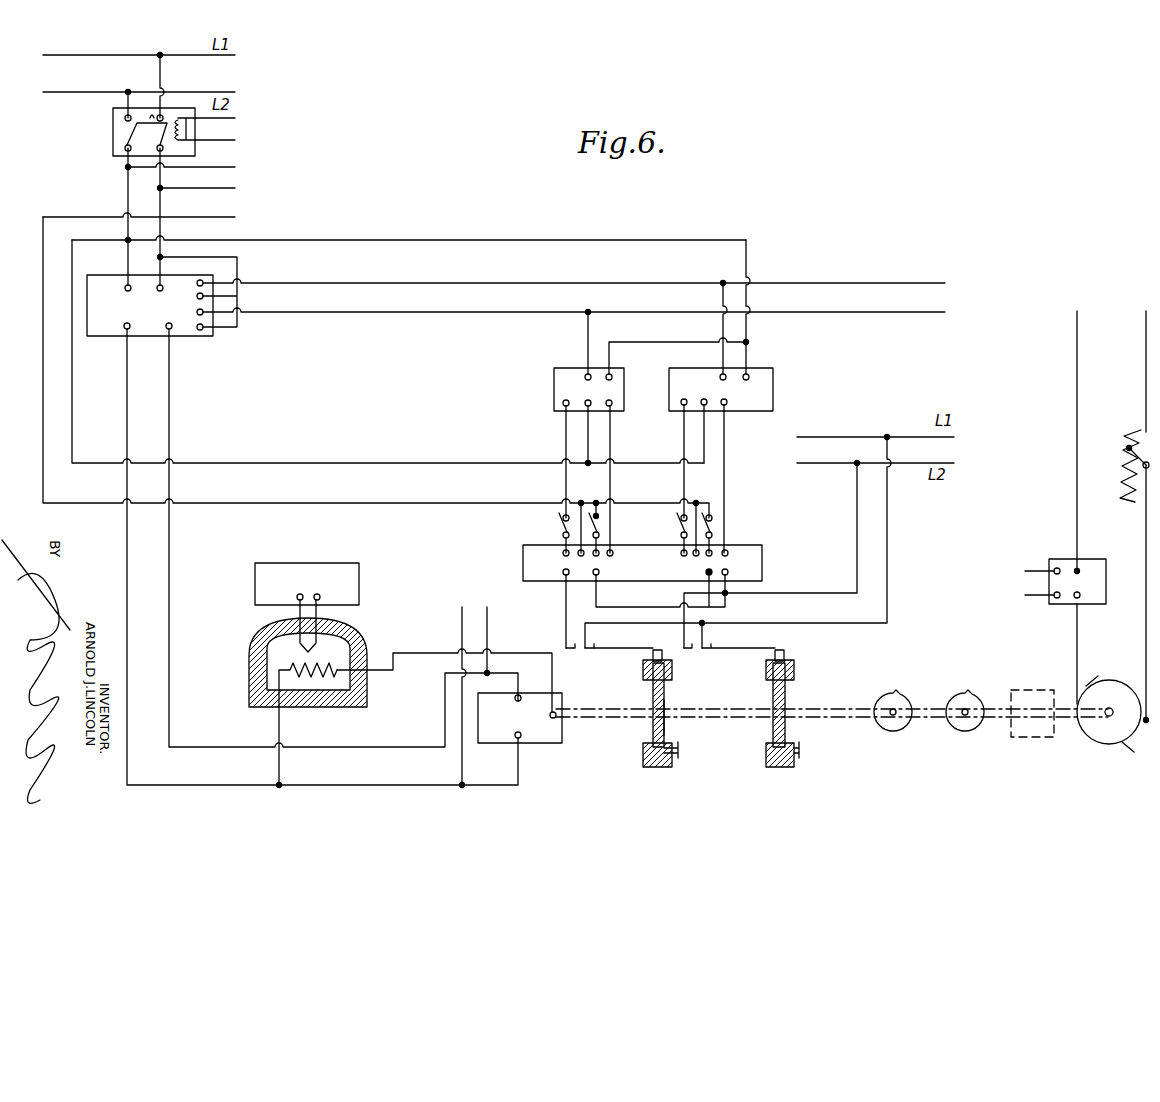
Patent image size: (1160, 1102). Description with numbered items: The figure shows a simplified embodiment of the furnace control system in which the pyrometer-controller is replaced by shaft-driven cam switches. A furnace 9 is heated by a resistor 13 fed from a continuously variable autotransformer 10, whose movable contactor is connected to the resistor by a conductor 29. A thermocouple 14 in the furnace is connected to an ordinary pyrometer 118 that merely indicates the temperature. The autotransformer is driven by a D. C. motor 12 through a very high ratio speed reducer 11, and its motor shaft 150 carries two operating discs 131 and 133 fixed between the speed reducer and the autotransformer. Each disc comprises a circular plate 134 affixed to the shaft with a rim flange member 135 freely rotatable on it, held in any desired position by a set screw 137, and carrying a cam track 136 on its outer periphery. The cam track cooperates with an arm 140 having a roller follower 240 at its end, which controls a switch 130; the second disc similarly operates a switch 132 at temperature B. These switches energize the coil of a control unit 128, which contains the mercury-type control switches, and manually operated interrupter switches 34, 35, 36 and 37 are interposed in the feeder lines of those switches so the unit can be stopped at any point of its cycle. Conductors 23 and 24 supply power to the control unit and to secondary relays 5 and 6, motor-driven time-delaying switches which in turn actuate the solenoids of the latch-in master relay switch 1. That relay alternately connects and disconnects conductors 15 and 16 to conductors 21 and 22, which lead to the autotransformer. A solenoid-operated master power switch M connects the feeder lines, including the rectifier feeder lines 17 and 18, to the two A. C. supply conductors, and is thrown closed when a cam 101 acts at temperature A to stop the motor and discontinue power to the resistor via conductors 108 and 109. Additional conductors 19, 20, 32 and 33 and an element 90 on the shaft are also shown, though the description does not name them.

The master relay switch 1 is at (190, 335).
The secondary relay 5 is at (552, 386).
The secondary relay 6 is at (772, 390).
The furnace 9 is at (249, 648).
The autotransformer 10 is at (500, 744).
The speed reducer 11 is at (1033, 738).
The D. C. motor 12 is at (1100, 740).
The resistor 13 is at (318, 680).
The thermocouple 14 is at (312, 647).
The conductor 15 is at (127, 199).
The conductor 16 is at (160, 199).
The feeder line 17 is at (210, 170).
The feeder line 18 is at (209, 191).
The conductor 19 is at (206, 220).
The conductor 20 is at (504, 238).
The conductor 21 is at (126, 593).
The conductor 22 is at (169, 597).
The conductor 23 is at (64, 218).
The conductor 24 is at (84, 245).
The conductor 29 is at (412, 653).
The conductor 32 is at (488, 312).
The conductor 33 is at (494, 280).
The interrupter switch 34 is at (556, 533).
The interrupter switch 35 is at (600, 530).
The interrupter switch 36 is at (680, 533).
The interrupter switch 37 is at (716, 530).
The cam 90 is at (966, 733).
The cam 101 is at (895, 731).
The conductor 108 is at (460, 620).
The conductor 109 is at (489, 620).
The pyrometer 118 is at (360, 592).
The control unit 128 is at (756, 565).
The switch 130 is at (583, 662).
The operating disc 131 is at (651, 730).
The switch 132 is at (706, 662).
The operating disc 133 is at (794, 697).
The circular plate 134 is at (666, 735).
The rim flange member 135 is at (659, 768).
The cam track 136 is at (660, 660).
The set screw 137 is at (679, 753).
The arm 140 is at (622, 646).
The motor shaft 150 is at (836, 718).
The roller follower 240 is at (655, 652).
The master power operating switch M is at (120, 132).